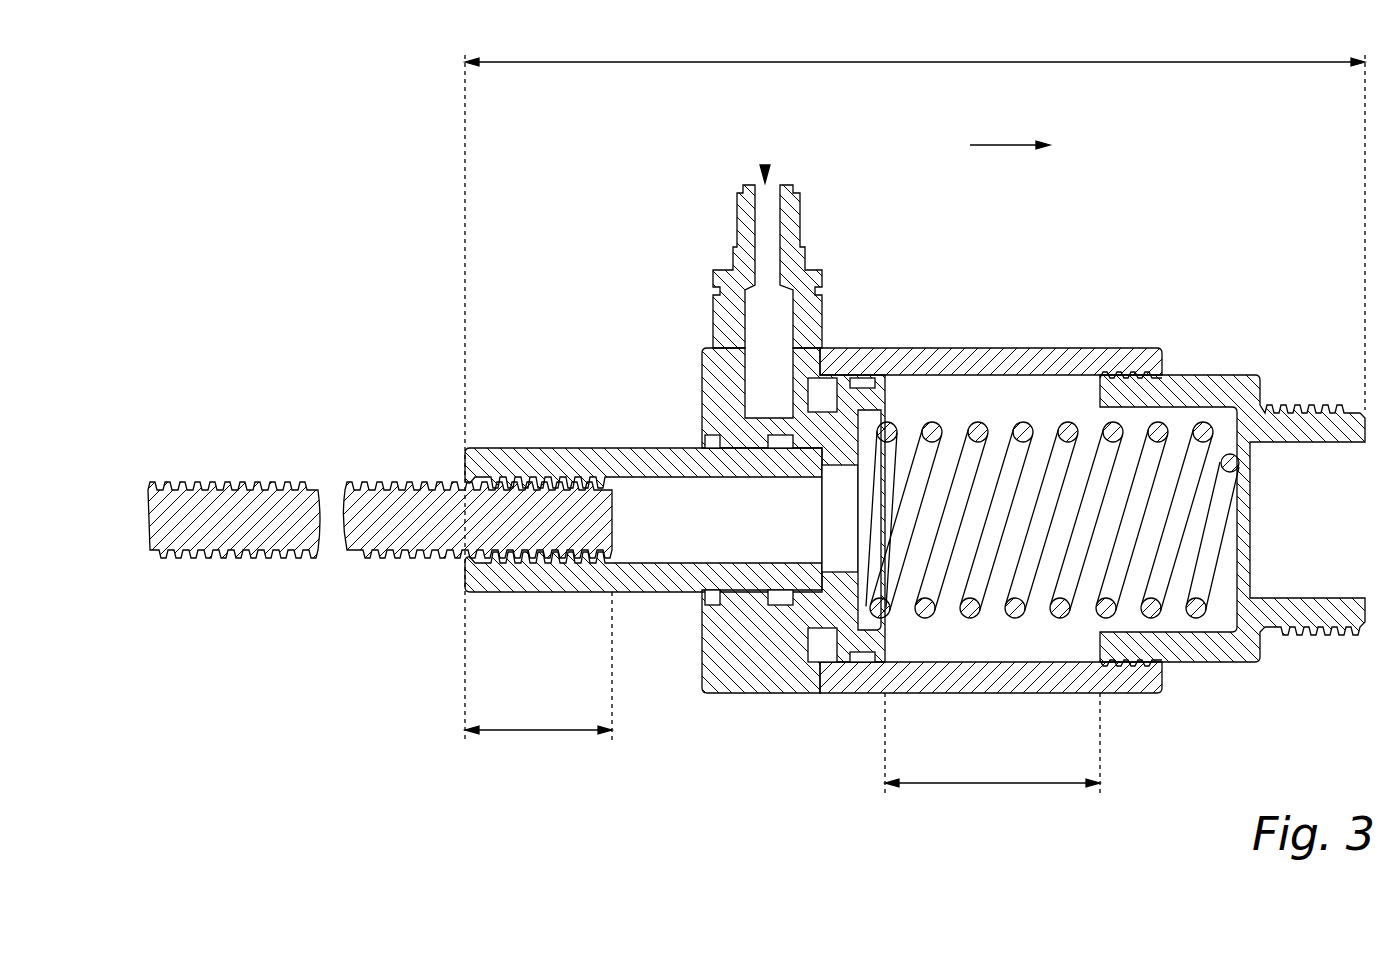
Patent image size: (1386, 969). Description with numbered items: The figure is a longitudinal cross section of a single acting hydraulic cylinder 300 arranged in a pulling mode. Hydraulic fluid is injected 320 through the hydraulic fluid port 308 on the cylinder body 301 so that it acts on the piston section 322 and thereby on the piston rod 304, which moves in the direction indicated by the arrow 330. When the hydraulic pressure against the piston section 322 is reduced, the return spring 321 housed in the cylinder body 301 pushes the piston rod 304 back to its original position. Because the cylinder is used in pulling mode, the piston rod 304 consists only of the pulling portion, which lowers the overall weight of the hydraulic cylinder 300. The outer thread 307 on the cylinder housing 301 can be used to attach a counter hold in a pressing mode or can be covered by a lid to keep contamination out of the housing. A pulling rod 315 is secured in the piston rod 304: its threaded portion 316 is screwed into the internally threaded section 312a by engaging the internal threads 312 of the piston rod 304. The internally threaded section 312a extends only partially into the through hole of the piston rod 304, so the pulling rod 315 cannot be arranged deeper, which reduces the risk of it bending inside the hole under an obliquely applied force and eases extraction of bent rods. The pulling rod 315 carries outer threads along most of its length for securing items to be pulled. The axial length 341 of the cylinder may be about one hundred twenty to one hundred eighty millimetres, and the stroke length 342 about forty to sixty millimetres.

The single acting hydraulic cylinder 300 is at (915, 420).
The cylinder body 301 is at (975, 682).
The piston rod 304 is at (567, 577).
The outer thread 307 is at (1322, 410).
The hydraulic fluid port 308 is at (802, 198).
The internal threads 312 is at (643, 493).
The internally threaded section 312a is at (538, 679).
The pulling rod 315 is at (231, 530).
The threaded portion 316 is at (463, 563).
The hydraulic fluid injection 320 is at (765, 168).
The return spring 321 is at (1032, 428).
The piston section 322 is at (858, 378).
The arrow 330 is at (1010, 126).
The axial length 341 is at (915, 383).
The stroke length 342 is at (992, 753).